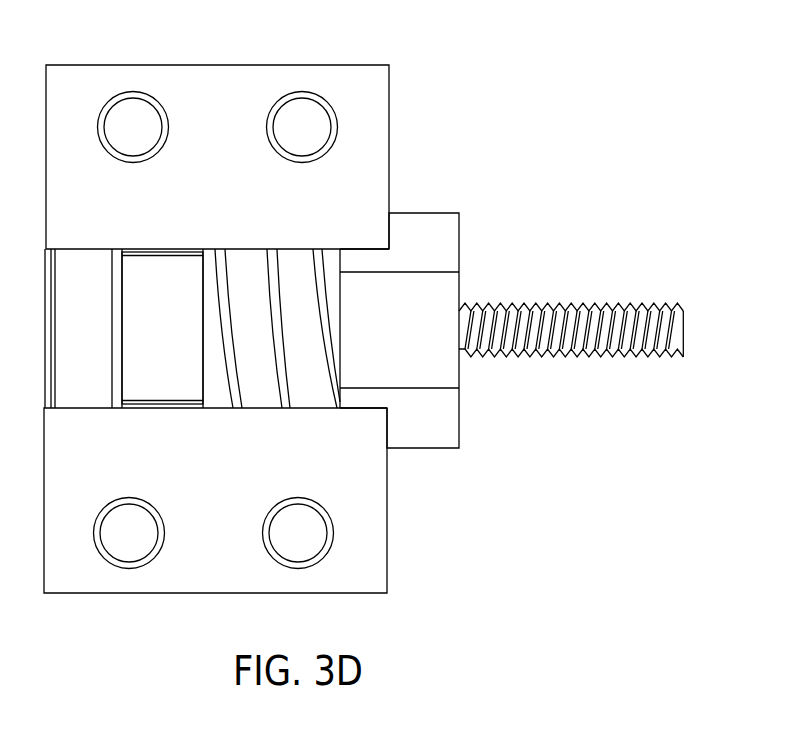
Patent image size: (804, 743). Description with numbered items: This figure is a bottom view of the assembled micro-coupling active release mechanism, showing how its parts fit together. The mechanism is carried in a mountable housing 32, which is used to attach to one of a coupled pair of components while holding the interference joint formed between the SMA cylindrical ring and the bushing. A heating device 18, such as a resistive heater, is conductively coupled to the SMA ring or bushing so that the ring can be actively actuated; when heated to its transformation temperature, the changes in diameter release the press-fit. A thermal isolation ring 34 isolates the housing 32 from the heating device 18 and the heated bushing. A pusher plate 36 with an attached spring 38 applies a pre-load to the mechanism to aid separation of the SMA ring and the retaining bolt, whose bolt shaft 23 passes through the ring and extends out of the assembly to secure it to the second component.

The housing 32 is at (209, 77).
The heating device 18 is at (305, 403).
The thermal isolation ring 34 is at (117, 335).
The spring 38 is at (270, 265).
The pusher plate 36 is at (422, 218).
The bolt shaft 23 is at (607, 303).